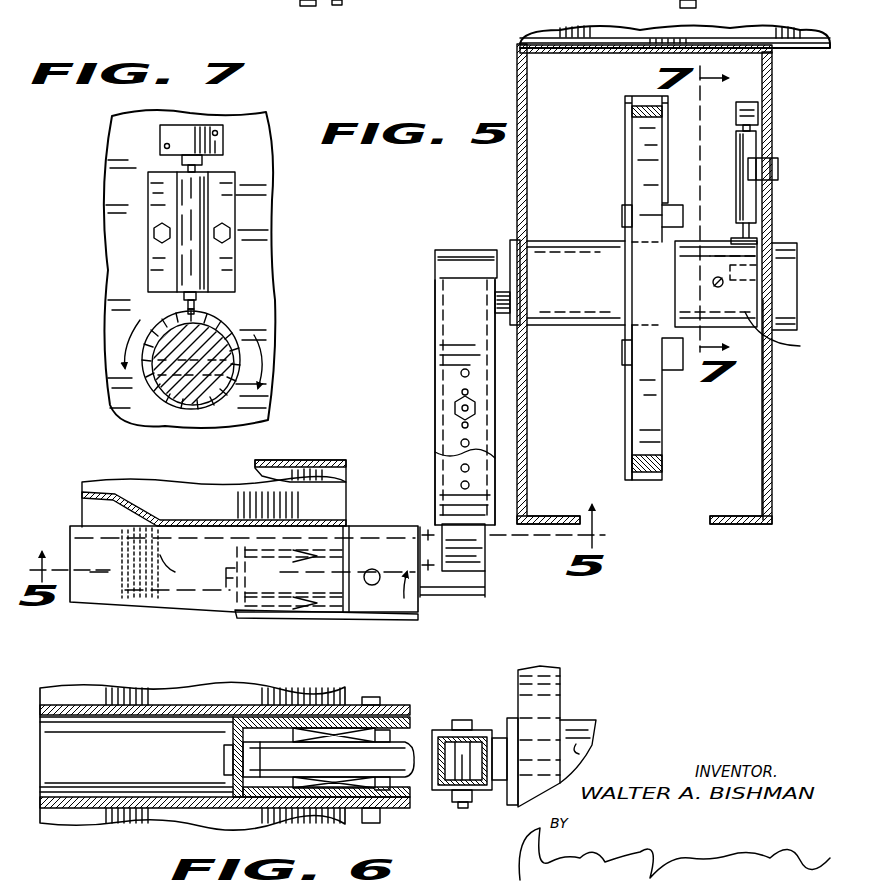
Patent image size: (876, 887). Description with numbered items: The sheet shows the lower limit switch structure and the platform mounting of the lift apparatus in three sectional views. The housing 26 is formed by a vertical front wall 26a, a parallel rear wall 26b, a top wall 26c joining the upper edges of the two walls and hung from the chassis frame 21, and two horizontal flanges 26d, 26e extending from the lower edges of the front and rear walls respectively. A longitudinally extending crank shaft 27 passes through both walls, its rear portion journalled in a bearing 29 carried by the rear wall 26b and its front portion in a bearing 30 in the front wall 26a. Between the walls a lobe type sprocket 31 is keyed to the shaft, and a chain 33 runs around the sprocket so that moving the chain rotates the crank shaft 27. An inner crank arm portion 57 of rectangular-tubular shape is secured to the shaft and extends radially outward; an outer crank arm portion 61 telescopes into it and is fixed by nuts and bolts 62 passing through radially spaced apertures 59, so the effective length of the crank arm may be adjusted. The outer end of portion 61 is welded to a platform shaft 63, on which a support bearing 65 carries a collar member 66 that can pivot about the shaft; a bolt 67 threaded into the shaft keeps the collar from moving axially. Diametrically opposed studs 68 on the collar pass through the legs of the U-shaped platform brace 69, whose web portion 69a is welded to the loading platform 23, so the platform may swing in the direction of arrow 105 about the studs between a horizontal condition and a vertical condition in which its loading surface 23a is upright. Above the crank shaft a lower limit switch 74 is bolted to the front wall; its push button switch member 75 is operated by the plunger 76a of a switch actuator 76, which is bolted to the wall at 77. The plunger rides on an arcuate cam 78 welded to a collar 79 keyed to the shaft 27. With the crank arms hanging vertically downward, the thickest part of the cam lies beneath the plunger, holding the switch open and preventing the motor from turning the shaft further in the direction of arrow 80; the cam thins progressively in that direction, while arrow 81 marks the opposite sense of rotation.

In FIG. 5, the chassis frame 21 is at (772, 10).
In FIG. 5, the loading platform 23 is at (348, 503).
In FIG. 6, the loading platform 23 is at (172, 822).
In FIG. 5, the platform loading surface 23a is at (305, 461).
In FIG. 5, the housing 26 is at (773, 428).
In FIG. 5, the front wall 26a is at (773, 486).
In FIG. 5, the rear wall 26b is at (516, 82).
In FIG. 5, the top wall 26c is at (580, 54).
In FIG. 5, the horizontal flange 26d is at (730, 525).
In FIG. 5, the horizontal flange 26e is at (540, 517).
In FIG. 6, the horizontal flange 26e is at (550, 700).
In FIG. 7, the crank shaft 27 is at (175, 387).
In FIG. 5, the crank shaft 27 is at (446, 260).
In FIG. 6, the crank shaft 27 is at (598, 748).
In FIG. 5, the bearing 29 is at (545, 243).
In FIG. 5, the bearing 30 is at (783, 246).
In FIG. 5, the lobe type sprocket 31 is at (645, 403).
In FIG. 5, the chain 33 is at (628, 104).
In FIG. 5, the inner crank arm portion 57 is at (436, 318).
In FIG. 6, the inner crank arm portion 57 is at (508, 735).
In FIG. 5, the adjustment holes 59 is at (460, 374).
In FIG. 5, the outer crank arm portion 61 is at (480, 553).
In FIG. 6, the outer crank arm portion 61 is at (444, 735).
In FIG. 5, the nuts and bolts 62 is at (456, 408).
In FIG. 6, the nuts and bolts 62 is at (465, 808).
In FIG. 5, the platform shaft 63 is at (474, 595).
In FIG. 6, the platform shaft 63 is at (258, 748).
In FIG. 6, the support bearing 65 is at (300, 732).
In FIG. 5, the collar member 66 is at (240, 616).
In FIG. 6, the collar member 66 is at (240, 716).
In FIG. 6, the bolt 67 is at (224, 762).
In FIG. 5, the studs 68 is at (374, 586).
In FIG. 6, the studs 68 is at (375, 824).
In FIG. 5, the platform brace 69 is at (75, 548).
In FIG. 6, the platform brace 69 is at (60, 708).
In FIG. 5, the bore 69a is at (252, 578).
In FIG. 6, the bore 69a is at (135, 757).
In FIG. 7, the lower limit switch 74 is at (164, 146).
In FIG. 5, the lower limit switch 74 is at (755, 110).
In FIG. 7, the push button switch member 75 is at (198, 162).
In FIG. 7, the switch actuator 76 is at (222, 284).
In FIG. 5, the switch actuator 76 is at (748, 142).
In FIG. 7, the plunger 76a is at (187, 306).
In FIG. 5, the plunger 76a is at (740, 233).
In FIG. 7, the bolt 77 is at (156, 236).
In FIG. 5, the bolt 77 is at (780, 170).
In FIG. 7, the arcuate cam 78 is at (196, 312).
In FIG. 5, the arcuate cam 78 is at (745, 267).
In FIG. 7, the collar 79 is at (192, 410).
In FIG. 5, the collar 79 is at (785, 333).
In FIG. 7, the arrow 80 is at (125, 345).
In FIG. 7, the rotation direction 81 is at (258, 358).
In FIG. 5, the arrow 105 is at (408, 600).